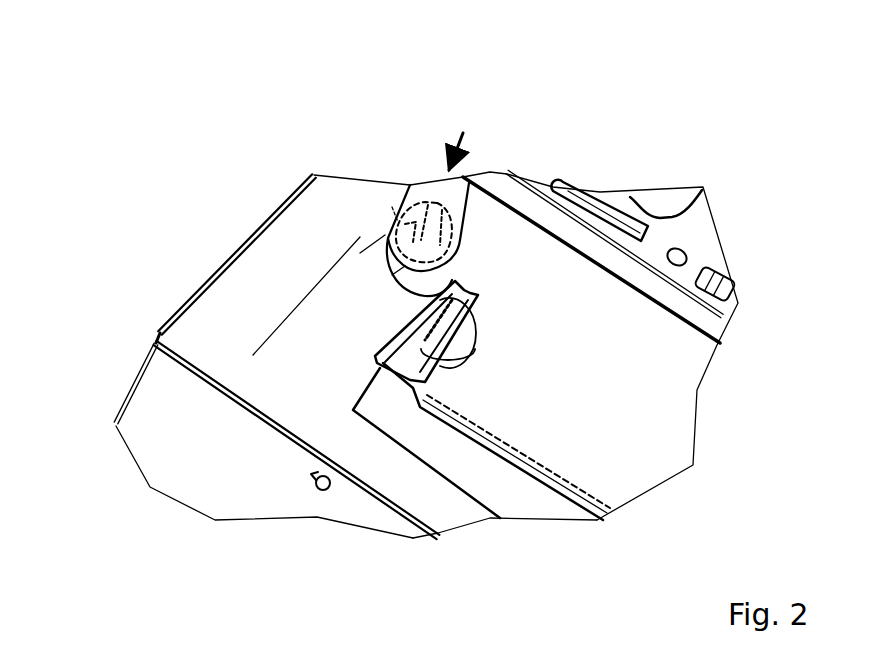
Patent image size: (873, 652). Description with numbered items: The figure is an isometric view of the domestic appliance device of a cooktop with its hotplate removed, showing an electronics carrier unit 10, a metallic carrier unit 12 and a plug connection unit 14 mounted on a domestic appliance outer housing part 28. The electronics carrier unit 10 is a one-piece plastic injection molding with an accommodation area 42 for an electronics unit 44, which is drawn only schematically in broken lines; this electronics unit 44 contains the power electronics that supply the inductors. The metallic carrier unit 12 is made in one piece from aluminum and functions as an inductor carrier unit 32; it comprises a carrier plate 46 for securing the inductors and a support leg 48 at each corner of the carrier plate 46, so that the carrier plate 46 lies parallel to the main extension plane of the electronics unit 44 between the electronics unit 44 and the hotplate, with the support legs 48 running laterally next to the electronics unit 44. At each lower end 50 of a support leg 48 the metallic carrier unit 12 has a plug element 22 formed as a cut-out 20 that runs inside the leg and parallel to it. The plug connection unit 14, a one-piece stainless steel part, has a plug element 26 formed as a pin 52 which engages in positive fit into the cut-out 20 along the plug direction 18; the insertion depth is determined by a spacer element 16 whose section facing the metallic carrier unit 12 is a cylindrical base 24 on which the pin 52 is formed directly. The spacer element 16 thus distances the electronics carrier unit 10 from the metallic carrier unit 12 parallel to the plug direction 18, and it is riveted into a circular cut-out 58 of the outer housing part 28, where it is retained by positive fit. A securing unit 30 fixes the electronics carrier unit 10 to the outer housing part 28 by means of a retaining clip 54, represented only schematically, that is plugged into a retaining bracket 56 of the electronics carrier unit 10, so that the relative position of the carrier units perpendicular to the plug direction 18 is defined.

The electronics carrier unit 10 is at (548, 500).
The metallic carrier unit 12 is at (668, 295).
The plug connection unit 14 is at (376, 235).
The spacer element 16 is at (370, 240).
The plug direction 18 is at (466, 153).
The cut-out 20 is at (253, 355).
The plug element 22 is at (418, 259).
The cylindrical base 24 is at (385, 235).
The plug element 26 is at (423, 224).
The domestic appliance outer housing part 28 is at (312, 418).
The securing unit 30 is at (484, 355).
The inductor carrier unit 32 is at (732, 290).
The accommodation area 42 is at (485, 417).
The electronics unit 44 is at (540, 477).
The carrier plate 46 is at (703, 222).
The support leg 48 is at (392, 207).
The lower end 50 is at (401, 256).
The pin 52 is at (434, 203).
The retaining clip 54 is at (372, 362).
The retaining bracket 56 is at (455, 322).
The cut-out 58 is at (442, 286).